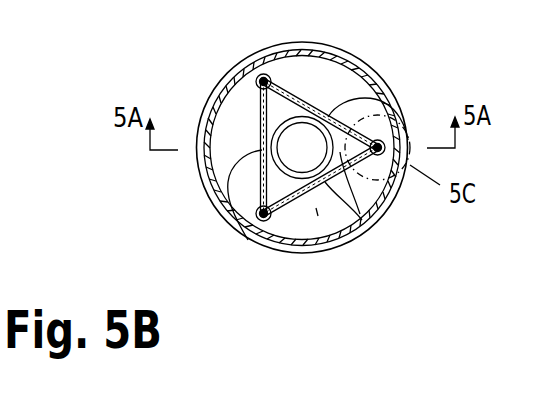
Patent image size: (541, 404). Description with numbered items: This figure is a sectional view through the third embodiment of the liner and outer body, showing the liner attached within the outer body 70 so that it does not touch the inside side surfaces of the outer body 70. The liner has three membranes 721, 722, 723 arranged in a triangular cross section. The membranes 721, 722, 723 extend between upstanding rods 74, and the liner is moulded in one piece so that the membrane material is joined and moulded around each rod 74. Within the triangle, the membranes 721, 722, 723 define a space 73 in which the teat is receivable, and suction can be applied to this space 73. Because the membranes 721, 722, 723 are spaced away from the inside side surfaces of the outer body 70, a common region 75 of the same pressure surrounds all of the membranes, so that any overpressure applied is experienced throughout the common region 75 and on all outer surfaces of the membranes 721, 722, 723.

The outer body 70 is at (348, 55).
The space 73 is at (374, 198).
The upstanding rods 74 is at (257, 76).
The common region 75 is at (316, 210).
The membrane 721 is at (362, 222).
The membrane 722 is at (370, 95).
The membrane 723 is at (229, 221).